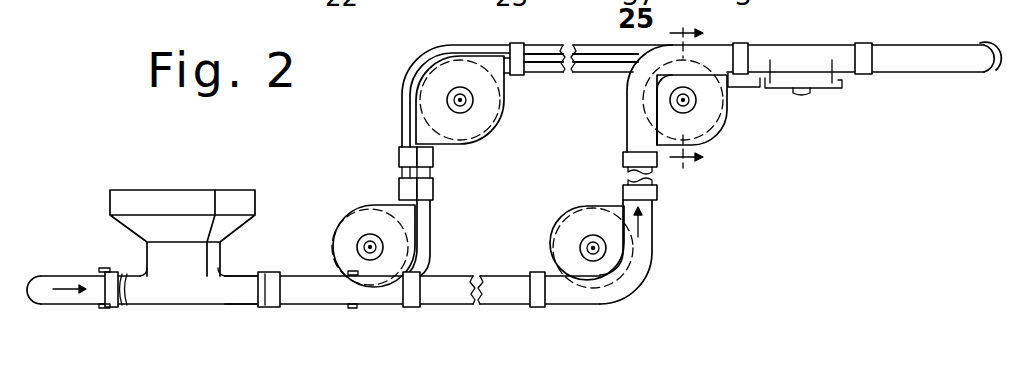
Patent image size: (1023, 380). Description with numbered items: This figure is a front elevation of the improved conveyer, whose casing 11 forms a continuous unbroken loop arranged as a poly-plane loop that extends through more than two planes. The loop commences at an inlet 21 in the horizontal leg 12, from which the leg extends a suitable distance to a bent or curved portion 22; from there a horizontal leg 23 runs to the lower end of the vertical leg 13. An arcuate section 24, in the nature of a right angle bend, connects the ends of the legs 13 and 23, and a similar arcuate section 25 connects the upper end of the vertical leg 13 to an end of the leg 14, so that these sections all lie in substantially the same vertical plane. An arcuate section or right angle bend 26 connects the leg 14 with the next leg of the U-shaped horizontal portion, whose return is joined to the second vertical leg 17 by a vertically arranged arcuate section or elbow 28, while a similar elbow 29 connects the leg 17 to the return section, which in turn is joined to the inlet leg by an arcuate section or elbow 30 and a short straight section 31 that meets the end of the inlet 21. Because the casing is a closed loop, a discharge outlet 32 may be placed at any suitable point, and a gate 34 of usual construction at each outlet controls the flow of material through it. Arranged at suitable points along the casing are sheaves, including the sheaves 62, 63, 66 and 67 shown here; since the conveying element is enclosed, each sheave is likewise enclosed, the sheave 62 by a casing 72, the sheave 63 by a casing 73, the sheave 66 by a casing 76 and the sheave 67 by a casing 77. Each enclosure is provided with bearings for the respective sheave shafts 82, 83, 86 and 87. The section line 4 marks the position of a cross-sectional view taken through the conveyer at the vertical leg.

The section line 4- 4 is at (686, 97).
The casing 11 is at (192, 304).
The horizontal leg 12 is at (234, 291).
The vertical leg 13 is at (624, 165).
The leg 14 is at (822, 50).
The second vertical leg 17 is at (398, 158).
The inlet 21 is at (175, 196).
The bent or curved portion 22 is at (294, 292).
The horizontal leg 23 is at (503, 298).
The arcuate section 24 is at (632, 277).
The arcuate section 25 is at (638, 74).
The arcuate section or right angle bend 26 is at (981, 68).
The arcuate section or elbow 28 is at (414, 66).
The arcuate section or elbow 29 is at (422, 268).
The arcuate section or elbow 30 is at (41, 281).
The short straight section 31 is at (133, 294).
The discharge outlet 32 is at (835, 90).
The gate 34 is at (784, 90).
The sheave 62 is at (550, 269).
The sheave 63 is at (645, 104).
The sheave 66 is at (505, 76).
The sheave 67 is at (321, 262).
The casing 72 is at (591, 207).
The casing 73 is at (722, 130).
The casing 76 is at (505, 114).
The casing 77 is at (371, 205).
The shaft 82 is at (584, 240).
The shaft 83 is at (697, 100).
The shaft 86 is at (468, 107).
The shaft 87 is at (367, 241).